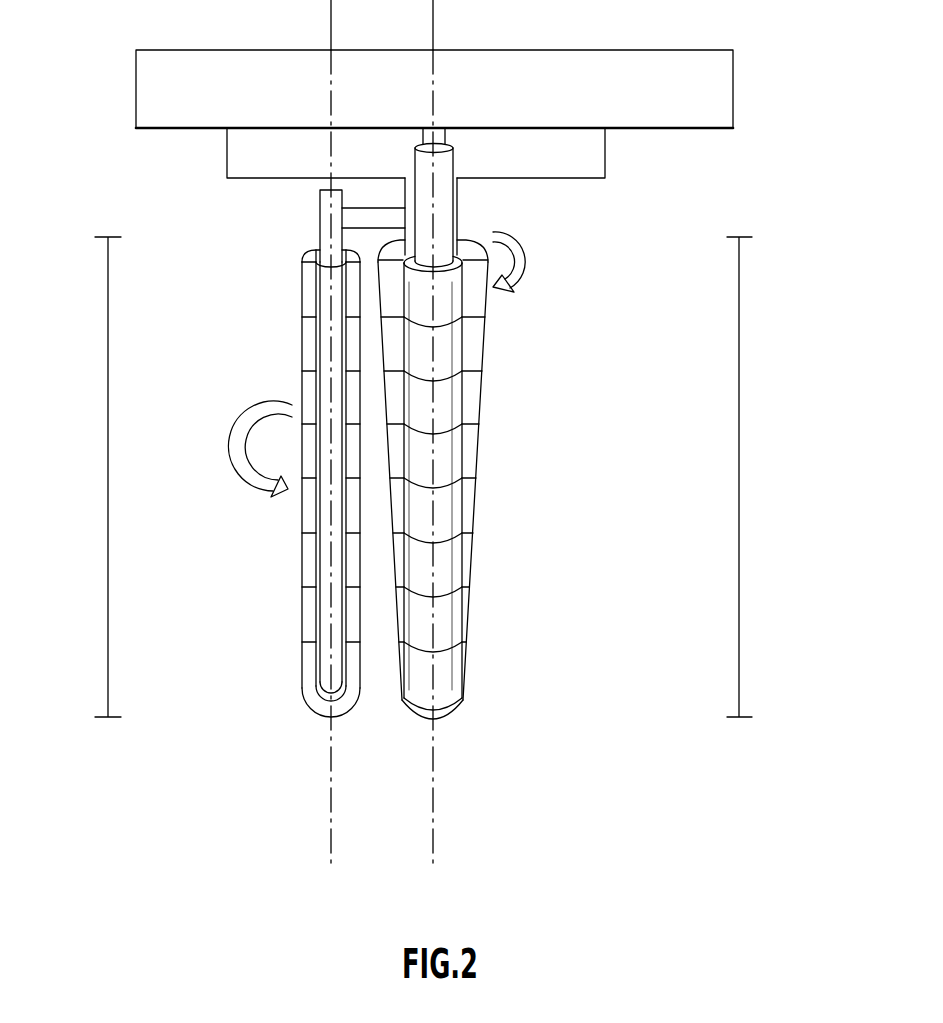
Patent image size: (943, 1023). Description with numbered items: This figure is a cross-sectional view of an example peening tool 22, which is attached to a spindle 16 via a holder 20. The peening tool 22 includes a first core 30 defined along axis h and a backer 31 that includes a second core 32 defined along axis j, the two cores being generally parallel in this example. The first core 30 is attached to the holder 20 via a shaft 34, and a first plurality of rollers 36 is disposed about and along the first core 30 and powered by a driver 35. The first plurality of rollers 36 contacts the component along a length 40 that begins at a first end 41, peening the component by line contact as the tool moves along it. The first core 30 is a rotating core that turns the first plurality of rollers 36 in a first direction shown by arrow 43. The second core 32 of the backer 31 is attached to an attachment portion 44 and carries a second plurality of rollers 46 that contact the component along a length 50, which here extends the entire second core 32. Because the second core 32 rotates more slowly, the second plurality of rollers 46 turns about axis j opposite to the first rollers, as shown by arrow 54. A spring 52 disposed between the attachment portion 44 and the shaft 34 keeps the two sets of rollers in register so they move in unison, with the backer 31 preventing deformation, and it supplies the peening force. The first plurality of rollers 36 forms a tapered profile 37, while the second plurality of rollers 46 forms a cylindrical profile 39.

The spindle 16 is at (668, 72).
The holder 20 is at (588, 150).
The peening tool 22 is at (605, 452).
The first core 30 is at (440, 592).
The backer 31 is at (250, 377).
The second core 32 is at (318, 609).
The shaft 34 is at (460, 205).
The driver 35 is at (452, 156).
The first plurality of rollers 36 is at (484, 337).
The tapered profile 37 is at (493, 526).
The cylindrical profile 39 is at (268, 528).
The length 40 is at (740, 477).
The first end 41 is at (462, 716).
The arrow 43 is at (527, 252).
The attachment portion 44 is at (333, 234).
The second plurality of rollers 46 is at (302, 350).
The length 50 is at (108, 479).
The spring 52 is at (370, 208).
The arrow 54 is at (246, 422).